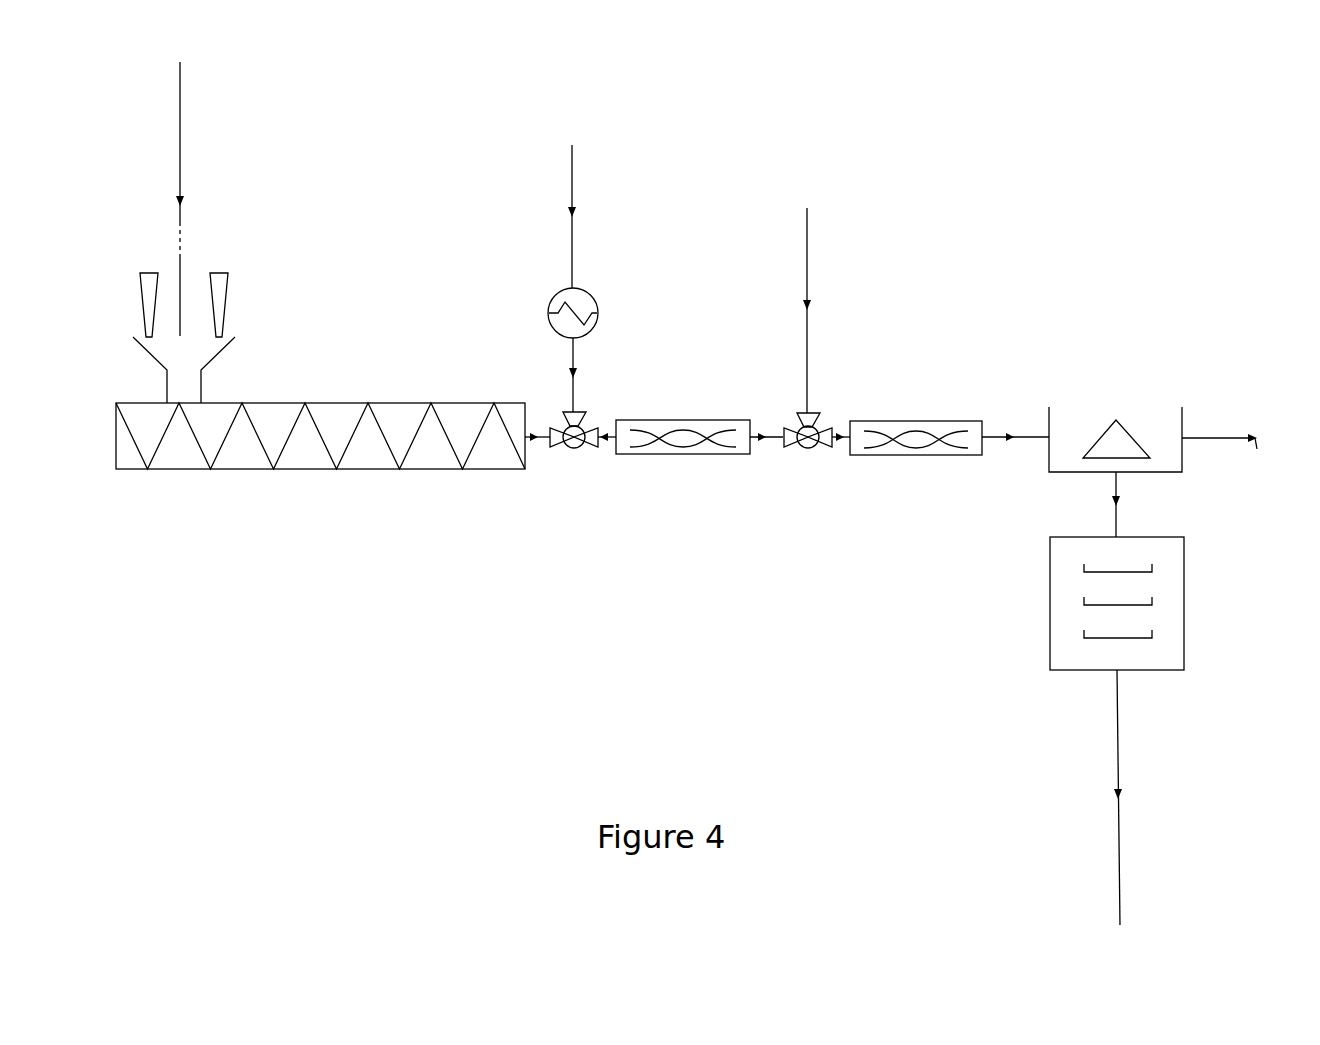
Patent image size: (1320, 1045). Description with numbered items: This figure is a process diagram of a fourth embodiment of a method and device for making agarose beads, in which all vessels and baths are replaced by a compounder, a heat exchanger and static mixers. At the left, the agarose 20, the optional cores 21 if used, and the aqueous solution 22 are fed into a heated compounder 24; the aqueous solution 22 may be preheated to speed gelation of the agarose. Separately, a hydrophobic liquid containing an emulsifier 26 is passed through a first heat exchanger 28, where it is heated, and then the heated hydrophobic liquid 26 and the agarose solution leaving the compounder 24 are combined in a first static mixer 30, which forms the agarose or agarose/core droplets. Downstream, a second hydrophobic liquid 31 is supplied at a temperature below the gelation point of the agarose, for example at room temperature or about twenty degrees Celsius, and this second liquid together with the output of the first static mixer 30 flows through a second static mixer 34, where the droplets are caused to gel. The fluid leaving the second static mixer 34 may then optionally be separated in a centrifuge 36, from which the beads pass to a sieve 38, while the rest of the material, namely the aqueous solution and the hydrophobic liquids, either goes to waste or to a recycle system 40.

The agarose 20 is at (149, 266).
The cores 21 is at (215, 263).
The aqueous solution 22 is at (182, 166).
The heated compounder 24 is at (303, 463).
The hydrophobic liquid containing an emulsifier 26 is at (574, 258).
The first heat exchanger 28 is at (590, 331).
The first static mixer 30 is at (666, 457).
The second hydrophobic liquid 31 is at (811, 281).
The second static mixer 34 is at (908, 458).
The centrifuge 36 is at (1145, 411).
The sieve 38 is at (1052, 607).
The recycle system 40 is at (1243, 442).